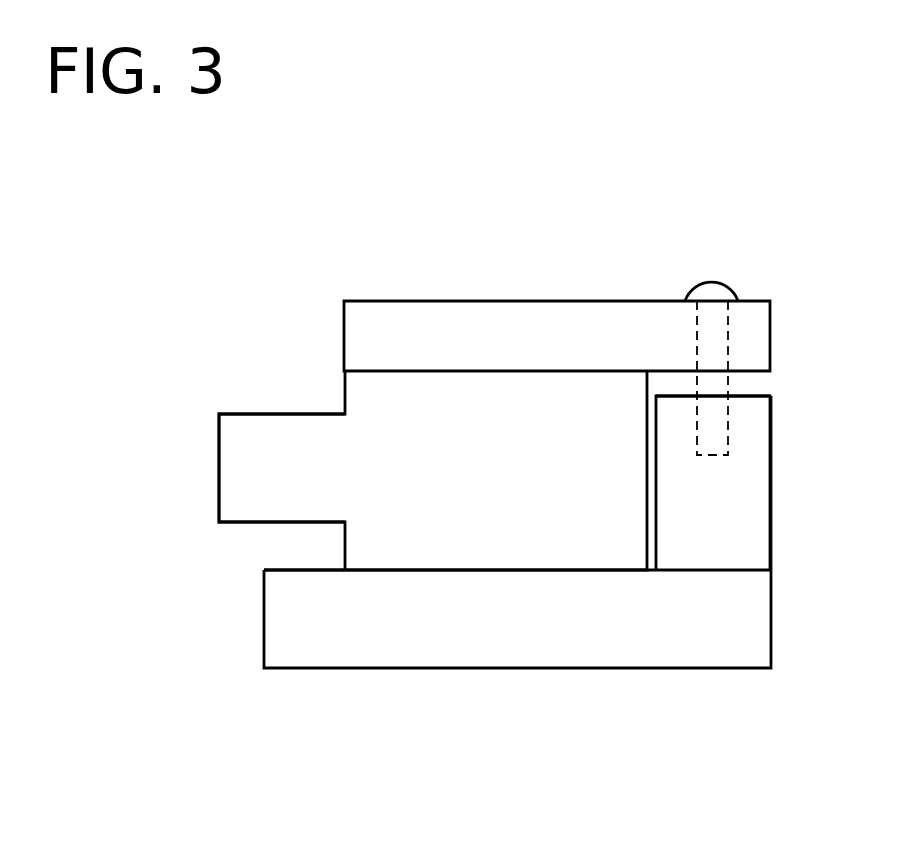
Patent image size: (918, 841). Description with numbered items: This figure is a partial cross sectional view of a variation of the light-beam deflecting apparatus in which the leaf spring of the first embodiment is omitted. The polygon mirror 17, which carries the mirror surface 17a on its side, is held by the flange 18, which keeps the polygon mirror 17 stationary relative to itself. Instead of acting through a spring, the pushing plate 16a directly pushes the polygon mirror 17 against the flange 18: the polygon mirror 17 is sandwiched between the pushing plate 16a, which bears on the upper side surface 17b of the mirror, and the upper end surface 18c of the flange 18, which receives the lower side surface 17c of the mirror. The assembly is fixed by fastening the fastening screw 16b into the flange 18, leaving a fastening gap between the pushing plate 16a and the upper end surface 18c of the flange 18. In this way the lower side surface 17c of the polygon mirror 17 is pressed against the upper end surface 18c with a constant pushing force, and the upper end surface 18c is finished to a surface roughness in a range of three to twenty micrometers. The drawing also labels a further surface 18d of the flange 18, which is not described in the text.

The pushing plate 16a is at (557, 297).
The fastening screw 16b is at (710, 287).
The polygon mirror 17 is at (374, 526).
The mirror surface 17a is at (218, 468).
The upper side surface 17b is at (416, 365).
The lower side surface 17c is at (461, 570).
The flange 18 is at (493, 577).
The upper end surface 18c is at (300, 568).
The upper surface of arm 18d is at (750, 397).